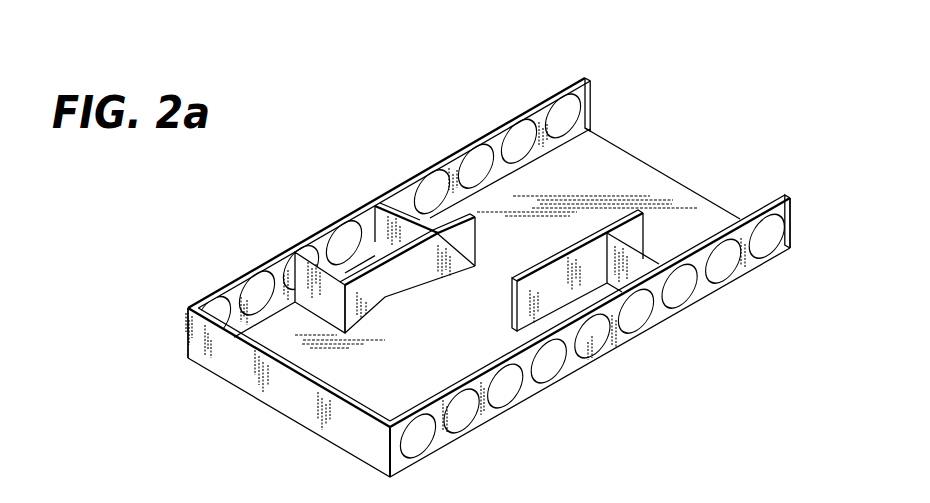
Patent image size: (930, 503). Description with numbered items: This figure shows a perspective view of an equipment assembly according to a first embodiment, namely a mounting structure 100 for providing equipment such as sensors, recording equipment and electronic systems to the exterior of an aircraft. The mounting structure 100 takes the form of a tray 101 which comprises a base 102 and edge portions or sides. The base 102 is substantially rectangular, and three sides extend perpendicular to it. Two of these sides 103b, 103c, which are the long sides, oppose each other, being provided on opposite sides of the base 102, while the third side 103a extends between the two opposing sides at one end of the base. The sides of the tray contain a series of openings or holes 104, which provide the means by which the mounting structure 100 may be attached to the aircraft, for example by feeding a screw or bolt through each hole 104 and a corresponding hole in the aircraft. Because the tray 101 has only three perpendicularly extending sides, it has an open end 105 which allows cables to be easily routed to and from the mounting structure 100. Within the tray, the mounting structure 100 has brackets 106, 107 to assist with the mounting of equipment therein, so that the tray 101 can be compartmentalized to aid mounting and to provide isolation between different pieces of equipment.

The mounting structure 100 is at (482, 249).
The tray 101 is at (318, 430).
The base 102 is at (534, 256).
The third side 103a is at (233, 371).
The side 103b is at (528, 113).
The side 103c is at (702, 290).
The holes 104 is at (257, 276).
The open end 105 is at (708, 190).
The bracket 106 is at (400, 297).
The bracket 107 is at (580, 244).